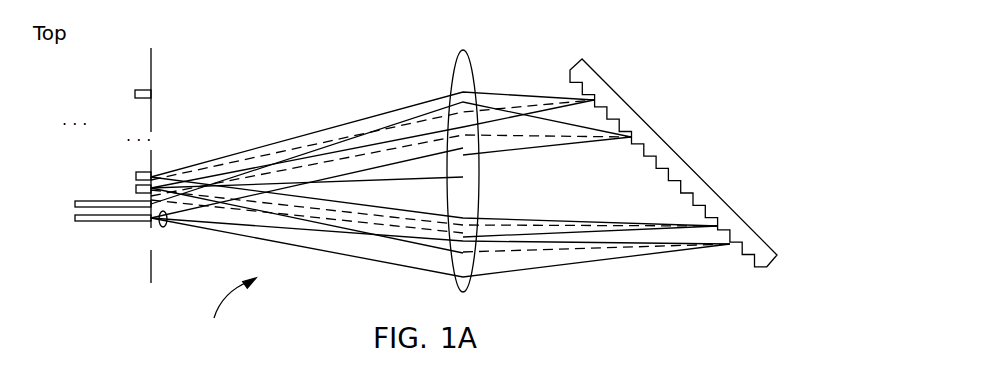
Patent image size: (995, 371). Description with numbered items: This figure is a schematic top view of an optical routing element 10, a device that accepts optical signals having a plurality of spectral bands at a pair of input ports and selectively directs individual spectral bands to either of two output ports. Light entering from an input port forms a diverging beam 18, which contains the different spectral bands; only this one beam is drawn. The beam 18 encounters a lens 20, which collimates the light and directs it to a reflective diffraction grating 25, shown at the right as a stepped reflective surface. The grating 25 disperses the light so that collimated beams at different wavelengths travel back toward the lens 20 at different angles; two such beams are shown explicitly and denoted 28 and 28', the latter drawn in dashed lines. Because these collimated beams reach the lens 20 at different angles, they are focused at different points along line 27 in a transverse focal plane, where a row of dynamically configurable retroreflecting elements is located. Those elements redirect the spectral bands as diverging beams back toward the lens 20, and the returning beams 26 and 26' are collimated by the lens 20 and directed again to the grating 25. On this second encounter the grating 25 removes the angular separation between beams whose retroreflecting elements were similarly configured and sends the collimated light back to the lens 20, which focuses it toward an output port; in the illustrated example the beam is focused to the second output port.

The optical routing element 10 is at (225, 312).
The beam 18 is at (164, 227).
The lens 20 is at (452, 66).
The reflective diffraction grating 25 is at (617, 92).
The returning beam 26 is at (372, 140).
The returning beam 26' is at (391, 156).
The line 27 is at (151, 265).
The collimated beam 28 is at (391, 168).
The collimated beam 28' is at (372, 105).